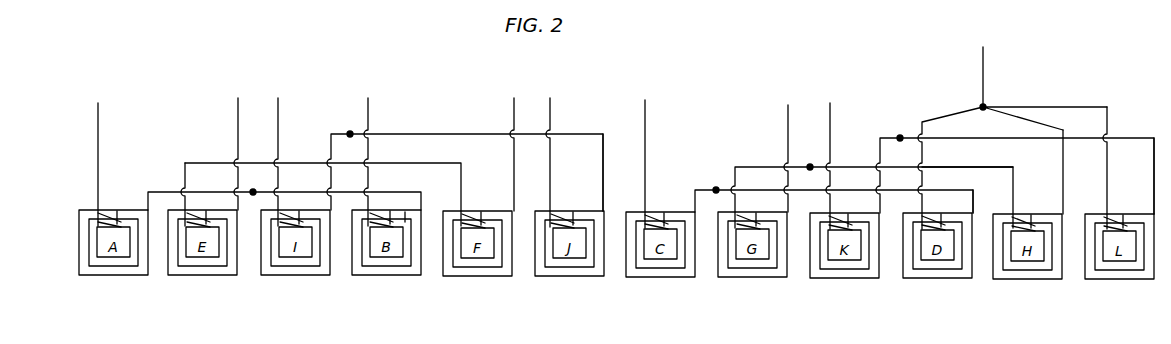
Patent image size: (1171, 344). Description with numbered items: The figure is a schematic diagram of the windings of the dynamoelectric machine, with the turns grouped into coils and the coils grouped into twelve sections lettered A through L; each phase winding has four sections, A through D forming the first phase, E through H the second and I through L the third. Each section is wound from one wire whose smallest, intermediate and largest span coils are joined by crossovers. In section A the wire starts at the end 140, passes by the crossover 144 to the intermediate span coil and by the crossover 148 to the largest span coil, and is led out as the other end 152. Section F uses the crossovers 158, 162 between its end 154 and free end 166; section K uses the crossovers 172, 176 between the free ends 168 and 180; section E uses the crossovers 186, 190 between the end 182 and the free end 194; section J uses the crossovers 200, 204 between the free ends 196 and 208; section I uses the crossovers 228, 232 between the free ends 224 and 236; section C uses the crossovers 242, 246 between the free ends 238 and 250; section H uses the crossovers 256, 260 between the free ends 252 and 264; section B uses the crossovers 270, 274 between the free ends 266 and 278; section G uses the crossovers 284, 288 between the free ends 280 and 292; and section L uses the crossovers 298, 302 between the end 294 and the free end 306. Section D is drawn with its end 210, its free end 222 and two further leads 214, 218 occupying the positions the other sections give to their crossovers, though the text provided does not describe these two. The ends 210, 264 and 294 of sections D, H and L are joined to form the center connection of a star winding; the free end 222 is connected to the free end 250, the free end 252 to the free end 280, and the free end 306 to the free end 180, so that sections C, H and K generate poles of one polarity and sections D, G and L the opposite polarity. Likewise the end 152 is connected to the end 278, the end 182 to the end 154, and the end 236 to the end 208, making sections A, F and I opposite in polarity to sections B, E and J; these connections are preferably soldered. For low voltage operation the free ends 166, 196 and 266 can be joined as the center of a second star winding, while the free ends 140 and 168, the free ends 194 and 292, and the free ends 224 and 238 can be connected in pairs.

The wire end 140 is at (100, 168).
The crossover 144 is at (117, 213).
The crossover 148 is at (116, 212).
The wire end 152 is at (153, 190).
The end of section F 154 is at (408, 165).
The crossover 158 is at (480, 216).
The crossover 162 is at (470, 212).
The free end 166 is at (512, 118).
The free end 168 is at (836, 103).
The crossover 172 is at (845, 218).
The crossover 176 is at (838, 214).
The free end 180 is at (878, 143).
The end of section E 182 is at (209, 163).
The crossover 186 is at (208, 216).
The crossover 190 is at (203, 212).
The free end 194 is at (236, 121).
The free end 196 is at (553, 118).
The crossover 200 is at (571, 216).
The crossover 204 is at (562, 212).
The free end 208 is at (606, 156).
The end of section D 210 is at (920, 125).
The coil lead 214 is at (940, 218).
The coil lead 218 is at (937, 214).
The free end 222 is at (972, 203).
The free end 224 is at (280, 126).
The crossover 228 is at (300, 216).
The crossover 232 is at (288, 212).
The free end 236 is at (330, 146).
The free end 238 is at (650, 113).
The crossover 242 is at (663, 218).
The crossover 246 is at (656, 213).
The free end 250 is at (706, 187).
The free end 252 is at (948, 166).
The crossover 256 is at (1030, 219).
The crossover 260 is at (1021, 215).
The free end 264 is at (1061, 157).
The free end 266 is at (372, 118).
The crossover 270 is at (412, 213).
The crossover 274 is at (378, 216).
The free end 278 is at (392, 212).
The free end 280 is at (754, 165).
The crossover 284 is at (757, 218).
The crossover 288 is at (745, 213).
The free end 292 is at (786, 109).
The end of section L 294 is at (1109, 124).
The crossover 298 is at (1121, 220).
The crossover 302 is at (1112, 215).
The free end 306 is at (1153, 160).